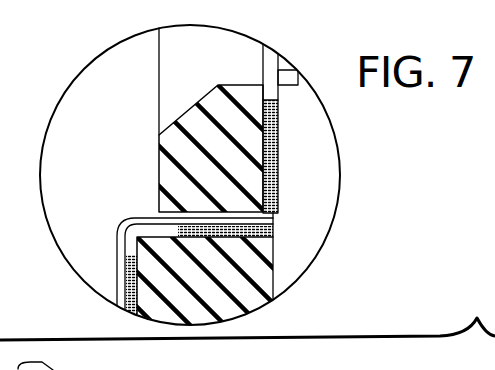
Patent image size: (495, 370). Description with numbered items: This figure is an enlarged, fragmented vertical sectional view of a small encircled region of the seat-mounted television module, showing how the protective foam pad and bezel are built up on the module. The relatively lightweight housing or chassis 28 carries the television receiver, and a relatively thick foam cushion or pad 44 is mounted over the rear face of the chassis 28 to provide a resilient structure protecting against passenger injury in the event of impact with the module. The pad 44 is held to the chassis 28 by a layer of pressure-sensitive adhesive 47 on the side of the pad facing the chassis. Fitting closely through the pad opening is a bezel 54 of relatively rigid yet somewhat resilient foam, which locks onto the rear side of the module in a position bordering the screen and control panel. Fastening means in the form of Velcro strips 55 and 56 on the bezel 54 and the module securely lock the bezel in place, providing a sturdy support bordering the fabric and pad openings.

The housing or chassis 28 is at (308, 192).
The foam cushion or pad 44 is at (240, 273).
The pressure-sensitive adhesive 47 is at (273, 272).
The bezel 54 is at (172, 153).
The Velcro strip 55 is at (262, 84).
The Velcro strip 56 is at (279, 158).